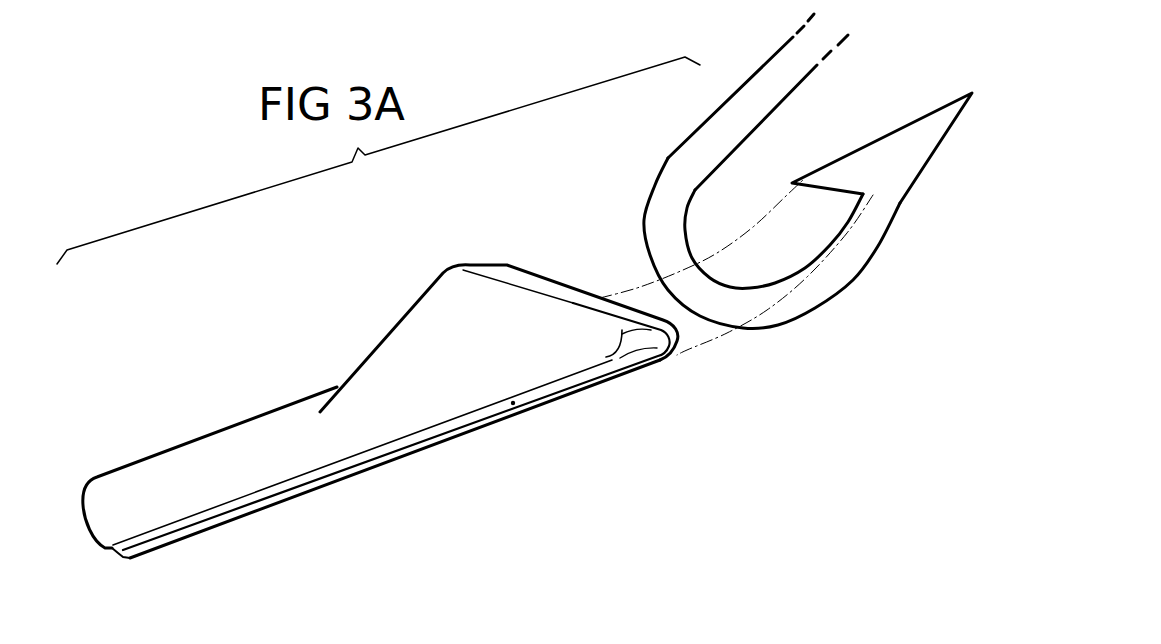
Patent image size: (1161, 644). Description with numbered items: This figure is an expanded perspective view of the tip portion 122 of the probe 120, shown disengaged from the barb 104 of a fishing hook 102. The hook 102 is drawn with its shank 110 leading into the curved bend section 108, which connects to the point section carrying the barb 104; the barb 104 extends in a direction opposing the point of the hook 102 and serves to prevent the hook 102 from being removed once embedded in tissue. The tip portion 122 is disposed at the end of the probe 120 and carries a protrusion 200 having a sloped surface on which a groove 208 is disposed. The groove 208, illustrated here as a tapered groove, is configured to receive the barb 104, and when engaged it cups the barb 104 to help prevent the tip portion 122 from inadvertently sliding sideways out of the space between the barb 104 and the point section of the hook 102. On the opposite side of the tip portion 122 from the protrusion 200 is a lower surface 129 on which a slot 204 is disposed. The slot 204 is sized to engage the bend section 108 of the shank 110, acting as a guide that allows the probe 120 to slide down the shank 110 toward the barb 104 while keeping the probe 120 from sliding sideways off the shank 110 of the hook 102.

The hook 102 is at (789, 171).
The barb 104 is at (840, 159).
The bend section 108 is at (652, 183).
The shank 110 is at (741, 143).
The probe 120 is at (432, 381).
The tip portion 122 is at (678, 387).
The lower surface 129 is at (562, 400).
The protrusion 200 is at (472, 312).
The slot 204 is at (647, 341).
The groove 208 is at (607, 302).